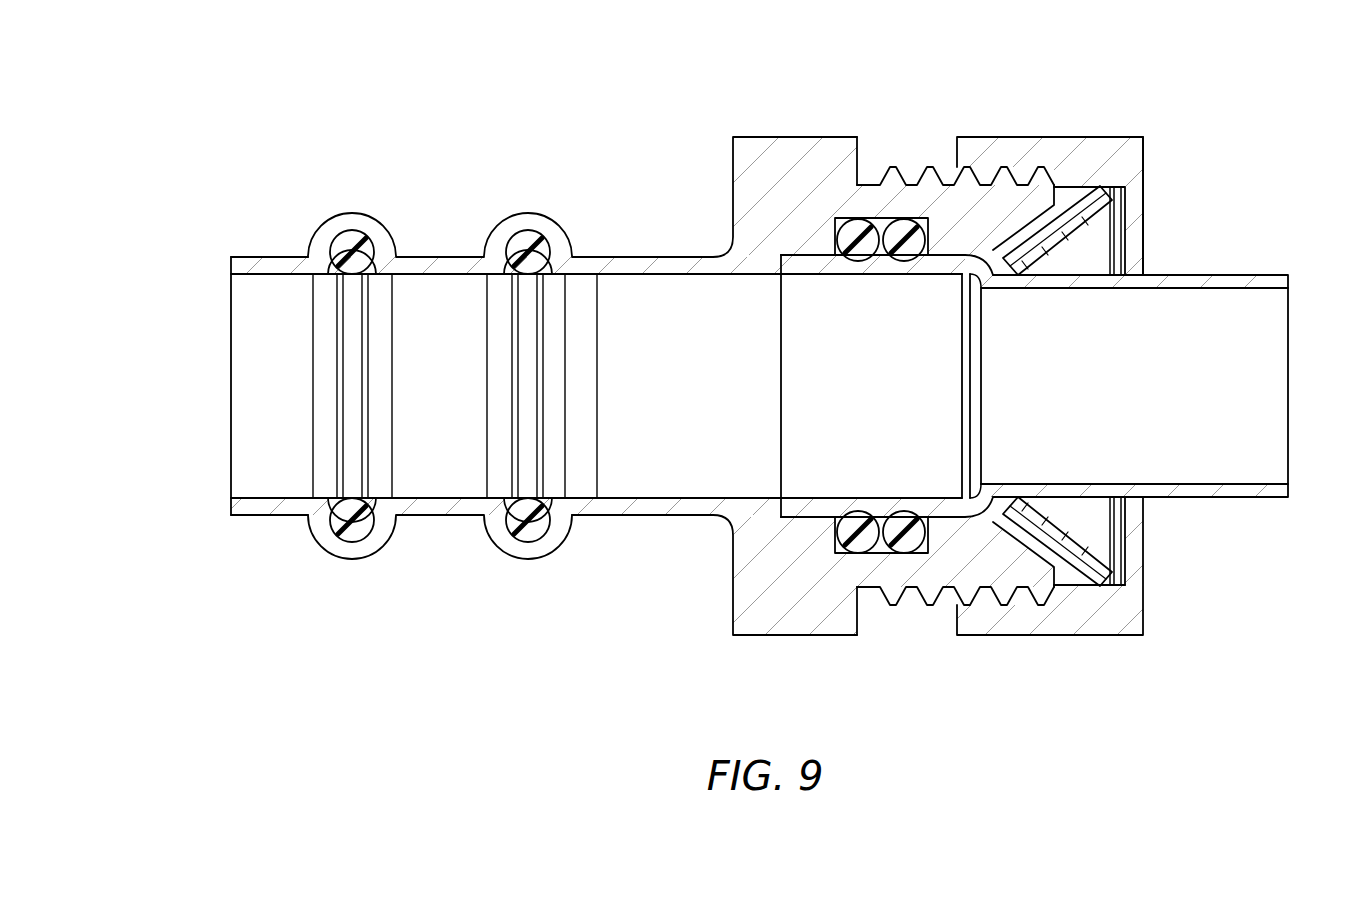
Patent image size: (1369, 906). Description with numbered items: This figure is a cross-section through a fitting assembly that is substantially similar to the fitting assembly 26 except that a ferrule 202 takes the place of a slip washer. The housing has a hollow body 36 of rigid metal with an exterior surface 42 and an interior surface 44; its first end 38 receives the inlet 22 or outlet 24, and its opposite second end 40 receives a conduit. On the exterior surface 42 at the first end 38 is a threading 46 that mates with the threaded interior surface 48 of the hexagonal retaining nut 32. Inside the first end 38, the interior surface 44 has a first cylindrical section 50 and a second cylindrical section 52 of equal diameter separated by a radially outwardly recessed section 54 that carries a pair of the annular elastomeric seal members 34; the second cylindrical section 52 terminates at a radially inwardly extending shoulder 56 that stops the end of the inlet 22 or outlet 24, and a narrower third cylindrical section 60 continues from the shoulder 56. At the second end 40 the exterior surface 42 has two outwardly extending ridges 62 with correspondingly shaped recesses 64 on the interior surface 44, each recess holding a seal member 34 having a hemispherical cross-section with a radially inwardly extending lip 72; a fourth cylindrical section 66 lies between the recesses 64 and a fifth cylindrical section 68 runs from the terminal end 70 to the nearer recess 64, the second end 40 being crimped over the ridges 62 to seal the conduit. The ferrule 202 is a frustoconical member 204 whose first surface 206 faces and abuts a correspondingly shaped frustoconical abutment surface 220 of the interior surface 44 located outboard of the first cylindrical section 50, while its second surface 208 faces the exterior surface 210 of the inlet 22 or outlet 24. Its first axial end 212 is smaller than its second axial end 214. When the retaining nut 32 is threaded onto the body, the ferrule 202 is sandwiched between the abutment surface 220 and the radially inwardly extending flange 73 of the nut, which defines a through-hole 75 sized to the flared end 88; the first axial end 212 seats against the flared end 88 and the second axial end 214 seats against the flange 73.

The inlet 22 is at (1181, 430).
The outlet 24 is at (1263, 498).
The fitting assembly 26 is at (598, 598).
The retaining nut 32 is at (1073, 617).
The seal members 34 is at (350, 245).
The hollow body 36 is at (640, 255).
The first end 38 is at (947, 552).
The second end 40 is at (280, 520).
The exterior surface 42 is at (638, 520).
The interior surface 44 is at (624, 277).
The threading 46 is at (917, 168).
The threaded interior surface 48 is at (1134, 386).
The first cylindrical section 50 is at (952, 495).
The second cylindrical section 52 is at (803, 273).
The recessed section 54 is at (868, 218).
The shoulder 56 is at (866, 449).
The third cylindrical section 60 is at (598, 495).
The ridges 62 is at (333, 216).
The recesses 64 is at (355, 528).
The fourth cylindrical section 66 is at (427, 276).
The fifth cylindrical section 68 is at (278, 276).
The terminal end 70 is at (242, 265).
The lip 72 is at (353, 278).
The flange 73 is at (1137, 216).
The through-hole 75 is at (1160, 472).
The flared end 88 is at (809, 508).
The ferrule 202 is at (1101, 153).
The frustoconical member 204 is at (1083, 210).
The first surface 206 is at (1030, 593).
The second surface 208 is at (1073, 487).
The exterior surface 210 is at (1175, 403).
The first axial end 212 is at (1000, 276).
The second axial end 214 is at (1113, 190).
The abutment surface 220 is at (1028, 512).